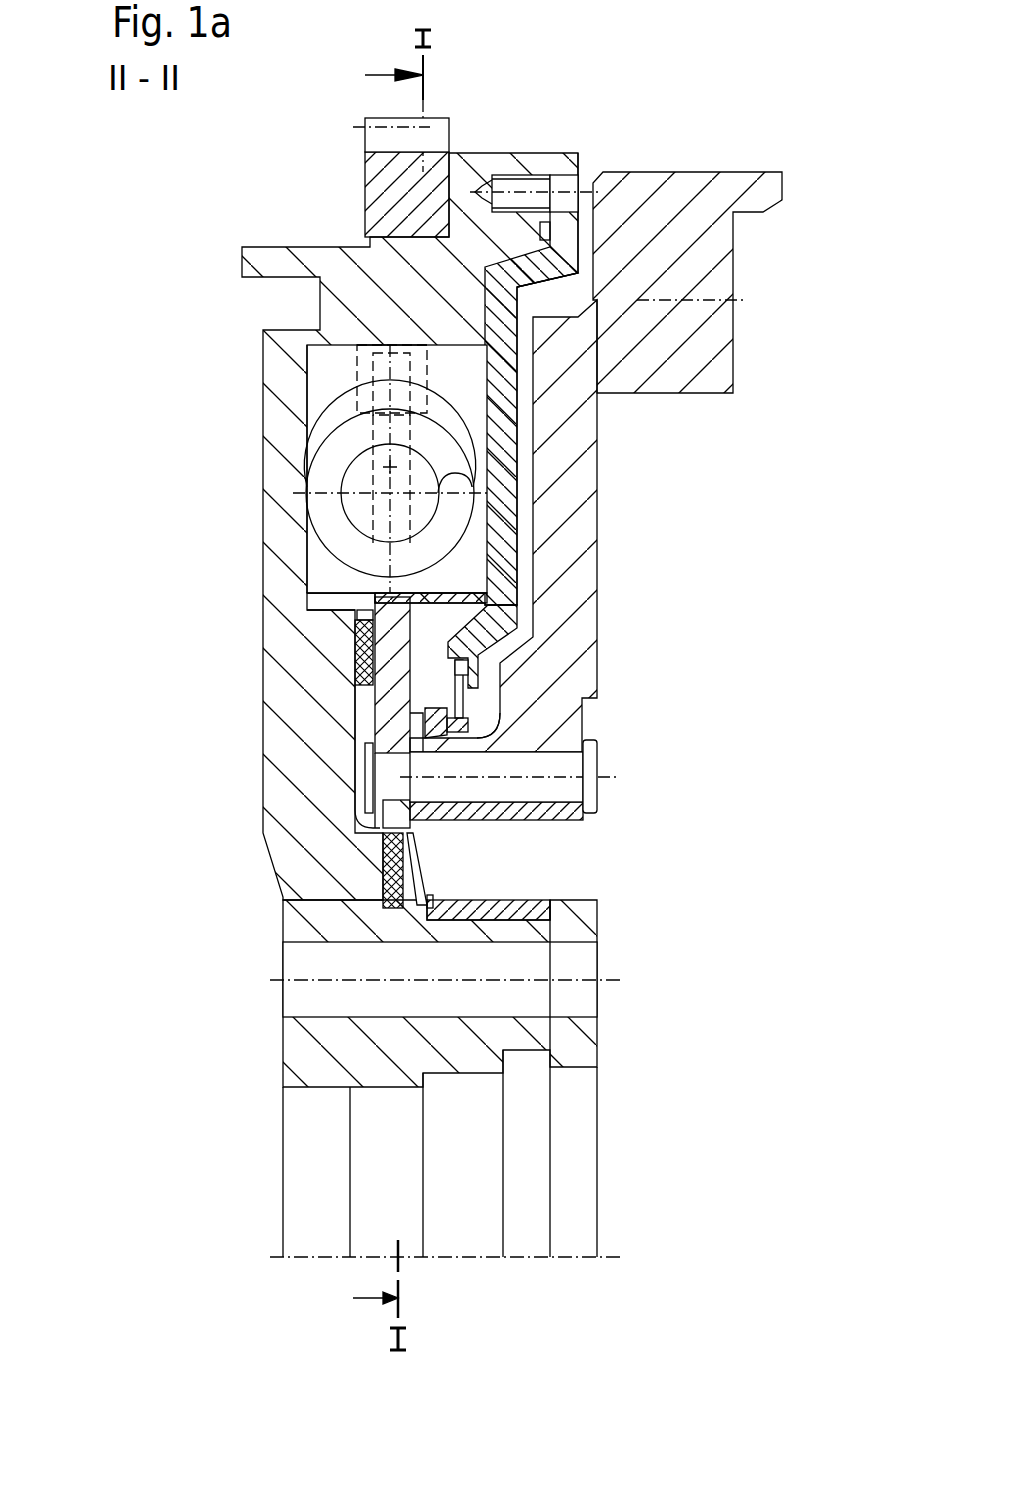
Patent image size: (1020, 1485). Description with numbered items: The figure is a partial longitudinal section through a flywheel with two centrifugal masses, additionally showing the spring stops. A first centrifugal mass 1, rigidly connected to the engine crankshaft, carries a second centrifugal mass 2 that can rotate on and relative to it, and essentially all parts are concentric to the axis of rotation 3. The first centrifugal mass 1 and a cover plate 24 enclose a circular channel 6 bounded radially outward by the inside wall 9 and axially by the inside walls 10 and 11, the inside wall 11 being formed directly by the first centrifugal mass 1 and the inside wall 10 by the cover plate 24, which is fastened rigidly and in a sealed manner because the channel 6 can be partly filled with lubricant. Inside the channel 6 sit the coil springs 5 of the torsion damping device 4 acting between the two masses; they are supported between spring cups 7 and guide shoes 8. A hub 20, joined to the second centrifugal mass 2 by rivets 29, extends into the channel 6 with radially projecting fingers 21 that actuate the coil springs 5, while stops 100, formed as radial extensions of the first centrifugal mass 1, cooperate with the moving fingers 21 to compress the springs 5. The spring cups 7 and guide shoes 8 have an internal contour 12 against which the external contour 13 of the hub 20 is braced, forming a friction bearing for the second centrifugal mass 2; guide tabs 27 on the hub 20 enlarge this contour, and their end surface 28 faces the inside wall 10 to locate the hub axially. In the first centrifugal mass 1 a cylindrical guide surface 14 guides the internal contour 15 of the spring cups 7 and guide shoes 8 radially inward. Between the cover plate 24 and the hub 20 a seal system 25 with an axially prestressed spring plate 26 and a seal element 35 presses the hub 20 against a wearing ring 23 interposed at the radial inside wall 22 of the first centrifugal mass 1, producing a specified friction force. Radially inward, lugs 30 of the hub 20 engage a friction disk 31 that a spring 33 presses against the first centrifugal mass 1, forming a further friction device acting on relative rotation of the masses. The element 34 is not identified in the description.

The first centrifugal mass 1 is at (277, 353).
The second centrifugal mass 2 is at (720, 195).
The axis of rotation 3 is at (306, 1258).
The torsion damping device 4 is at (257, 435).
The coil springs 5 is at (330, 507).
The channel 6 is at (495, 443).
The spring cups 7 is at (457, 365).
The guide shoes 8 is at (535, 216).
The inside wall 9 is at (340, 357).
The inside wall 10 is at (560, 407).
The inside wall 11 is at (327, 390).
The internal contour 12 is at (355, 625).
The external contour 13 is at (397, 587).
The guide surface 14 is at (342, 587).
The internal contour 15 is at (337, 603).
The hub 20 is at (372, 826).
The fingers 21 is at (357, 345).
The radial inside wall 22 is at (357, 713).
The wearing ring 23 is at (387, 740).
The cover plate 24 is at (583, 278).
The seal system 25 is at (478, 690).
The spring plate 26 is at (490, 682).
The guide tabs 27 is at (462, 660).
The end surface 28 is at (503, 597).
The rivets 29 is at (568, 787).
The lugs 30 is at (400, 823).
The friction disk 31 is at (383, 887).
The spring 33 is at (420, 868).
The stop block 34 is at (442, 140).
The seal element 35 is at (580, 731).
The stops 100 is at (320, 440).